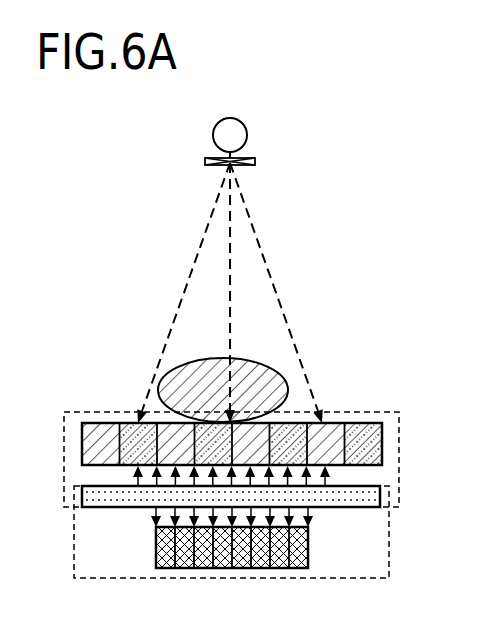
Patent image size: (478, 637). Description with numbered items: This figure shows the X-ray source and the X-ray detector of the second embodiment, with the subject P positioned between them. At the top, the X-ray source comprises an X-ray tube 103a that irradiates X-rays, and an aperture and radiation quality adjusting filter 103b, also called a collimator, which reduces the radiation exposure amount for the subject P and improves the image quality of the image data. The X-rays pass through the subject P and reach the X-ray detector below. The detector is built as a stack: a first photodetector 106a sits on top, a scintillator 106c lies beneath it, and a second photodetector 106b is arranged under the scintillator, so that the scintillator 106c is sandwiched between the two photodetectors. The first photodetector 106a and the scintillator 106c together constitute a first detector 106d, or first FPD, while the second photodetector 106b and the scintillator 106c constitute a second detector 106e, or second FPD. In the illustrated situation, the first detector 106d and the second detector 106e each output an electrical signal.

The X-ray tube 103a is at (247, 133).
The aperture and radiation quality adjusting filter 103b is at (256, 162).
The subject P is at (288, 387).
The first photodetector 106a is at (382, 452).
The second photodetector 106b is at (308, 545).
The scintillator 106c is at (380, 496).
The first detector 106d is at (399, 423).
The second detector 106e is at (389, 556).